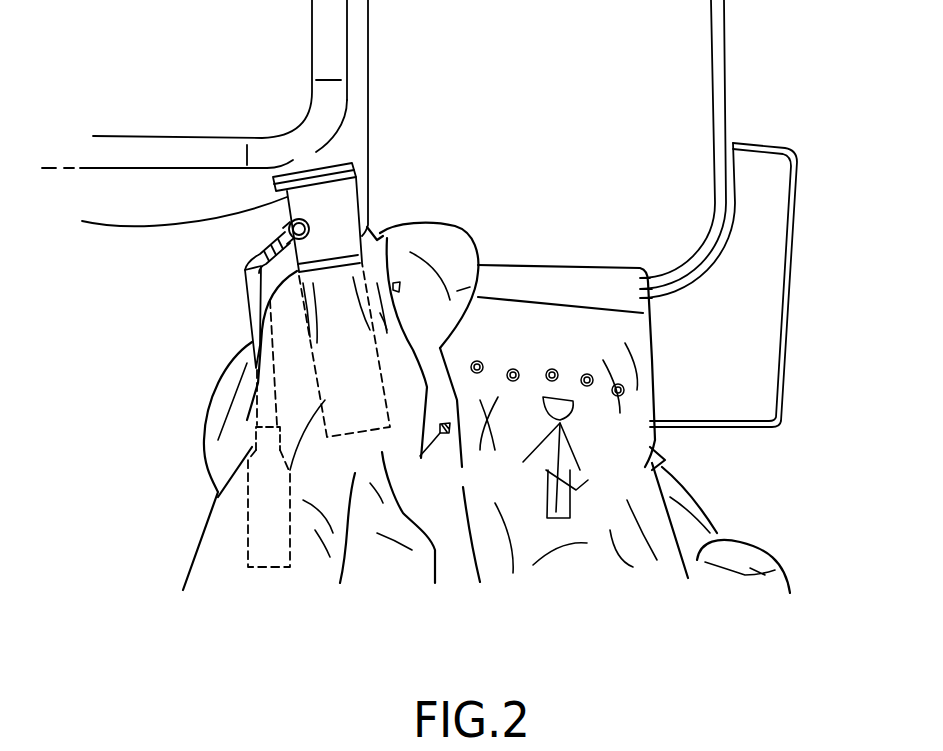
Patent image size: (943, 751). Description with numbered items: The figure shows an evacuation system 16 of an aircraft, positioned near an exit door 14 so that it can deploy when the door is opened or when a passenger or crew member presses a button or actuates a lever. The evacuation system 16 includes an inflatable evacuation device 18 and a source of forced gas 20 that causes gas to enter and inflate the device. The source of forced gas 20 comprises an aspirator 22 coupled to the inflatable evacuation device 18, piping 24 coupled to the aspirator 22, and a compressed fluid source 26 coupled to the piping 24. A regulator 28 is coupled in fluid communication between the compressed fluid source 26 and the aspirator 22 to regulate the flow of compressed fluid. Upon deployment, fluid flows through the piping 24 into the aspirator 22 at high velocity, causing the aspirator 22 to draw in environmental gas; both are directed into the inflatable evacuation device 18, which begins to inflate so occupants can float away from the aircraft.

The exit door 14 is at (726, 13).
The evacuation system 16 is at (93, 366).
The inflatable evacuation device 18 is at (452, 560).
The source of forced gas 20 is at (305, 159).
The aspirator 22 is at (347, 214).
The piping 24 is at (248, 295).
The compressed fluid source 26 is at (262, 568).
The regulator 28 is at (257, 442).